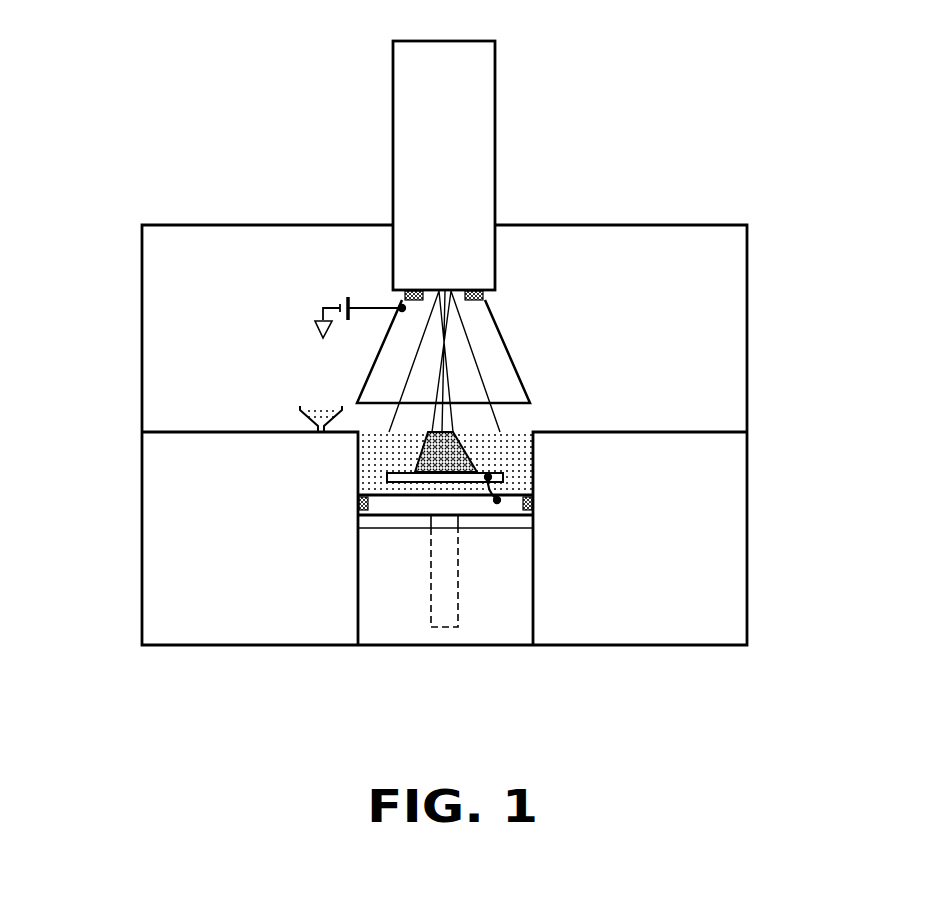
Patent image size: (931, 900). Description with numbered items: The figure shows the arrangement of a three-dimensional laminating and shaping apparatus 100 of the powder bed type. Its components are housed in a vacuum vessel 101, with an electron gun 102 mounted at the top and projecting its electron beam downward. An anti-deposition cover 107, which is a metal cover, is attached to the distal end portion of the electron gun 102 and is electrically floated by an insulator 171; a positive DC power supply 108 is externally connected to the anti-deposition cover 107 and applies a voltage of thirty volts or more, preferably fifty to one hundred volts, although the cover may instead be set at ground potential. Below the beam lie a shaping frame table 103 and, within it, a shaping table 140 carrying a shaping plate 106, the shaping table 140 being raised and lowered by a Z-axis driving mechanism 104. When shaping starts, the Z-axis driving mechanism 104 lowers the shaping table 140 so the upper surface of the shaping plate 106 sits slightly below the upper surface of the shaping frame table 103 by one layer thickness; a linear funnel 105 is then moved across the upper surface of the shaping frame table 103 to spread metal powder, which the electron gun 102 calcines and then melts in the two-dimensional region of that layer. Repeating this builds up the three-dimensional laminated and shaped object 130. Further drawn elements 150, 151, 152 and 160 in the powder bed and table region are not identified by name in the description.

The three-dimensional laminating and shaping apparatus 100 is at (212, 97).
The vacuum vessel 101 is at (142, 250).
The electron gun 102 is at (495, 103).
The shaping frame table 103 is at (730, 543).
The Z-axis driving mechanism 104 is at (448, 627).
The linear funnel 105 is at (303, 416).
The shaping plate 106 is at (412, 478).
The anti-deposition cover 107 is at (513, 360).
The DC power supply 108 is at (347, 295).
The three-dimensional laminated and shaped object 130 is at (483, 448).
The shaping table 140 is at (480, 508).
The build plate 150 is at (500, 490).
The powder bed upper layer 151 is at (397, 443).
The powder layer 152 is at (368, 470).
The seal member 160 is at (533, 502).
The insulator 171 is at (485, 297).